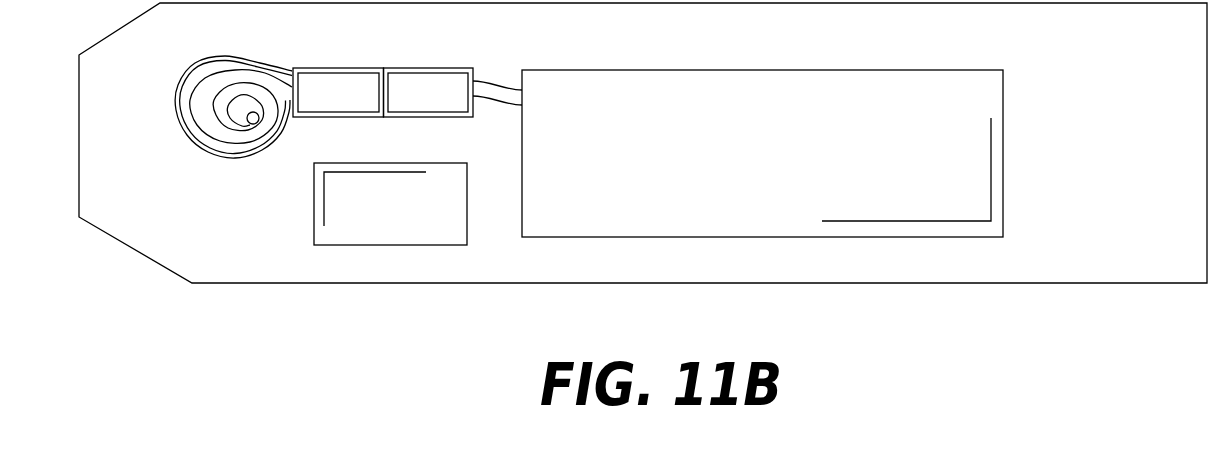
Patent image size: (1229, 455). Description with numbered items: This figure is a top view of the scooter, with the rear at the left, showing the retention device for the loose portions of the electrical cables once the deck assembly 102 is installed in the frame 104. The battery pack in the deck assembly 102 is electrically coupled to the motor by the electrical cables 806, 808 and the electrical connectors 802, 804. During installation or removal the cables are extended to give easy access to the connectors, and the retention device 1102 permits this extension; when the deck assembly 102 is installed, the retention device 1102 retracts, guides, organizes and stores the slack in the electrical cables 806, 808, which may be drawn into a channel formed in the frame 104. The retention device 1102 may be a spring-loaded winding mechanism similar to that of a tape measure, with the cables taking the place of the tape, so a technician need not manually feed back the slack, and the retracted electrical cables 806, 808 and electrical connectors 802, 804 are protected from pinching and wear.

The deck assembly 102 is at (723, 175).
The frame 104 is at (263, 228).
The electrical connector 802 is at (321, 108).
The electrical connector 804 is at (409, 108).
The electrical cable 806 is at (206, 140).
The electrical cable 808 is at (495, 90).
The retention device 1102 is at (186, 101).